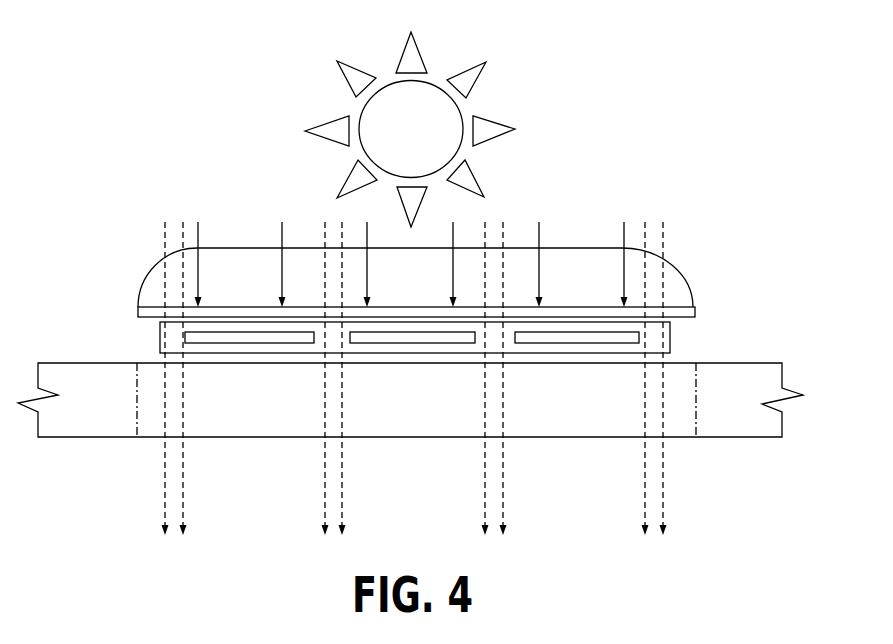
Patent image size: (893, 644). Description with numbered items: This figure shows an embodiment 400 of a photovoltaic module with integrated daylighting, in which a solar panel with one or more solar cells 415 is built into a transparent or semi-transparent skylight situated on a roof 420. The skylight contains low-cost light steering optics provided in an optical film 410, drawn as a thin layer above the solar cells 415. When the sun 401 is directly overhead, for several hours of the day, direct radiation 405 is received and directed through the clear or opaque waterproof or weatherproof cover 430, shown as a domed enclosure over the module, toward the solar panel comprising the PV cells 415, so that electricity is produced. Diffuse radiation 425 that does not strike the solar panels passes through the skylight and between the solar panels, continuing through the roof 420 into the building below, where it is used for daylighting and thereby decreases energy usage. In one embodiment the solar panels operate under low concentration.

The embodiment 400 is at (203, 83).
The sun 401 is at (427, 139).
The direct radiation 405 is at (282, 222).
The optical film 410 is at (251, 309).
The solar cells 415 is at (232, 348).
The roof 420 is at (250, 416).
The diffuse radiation 425 is at (150, 508).
The cover 430 is at (141, 267).